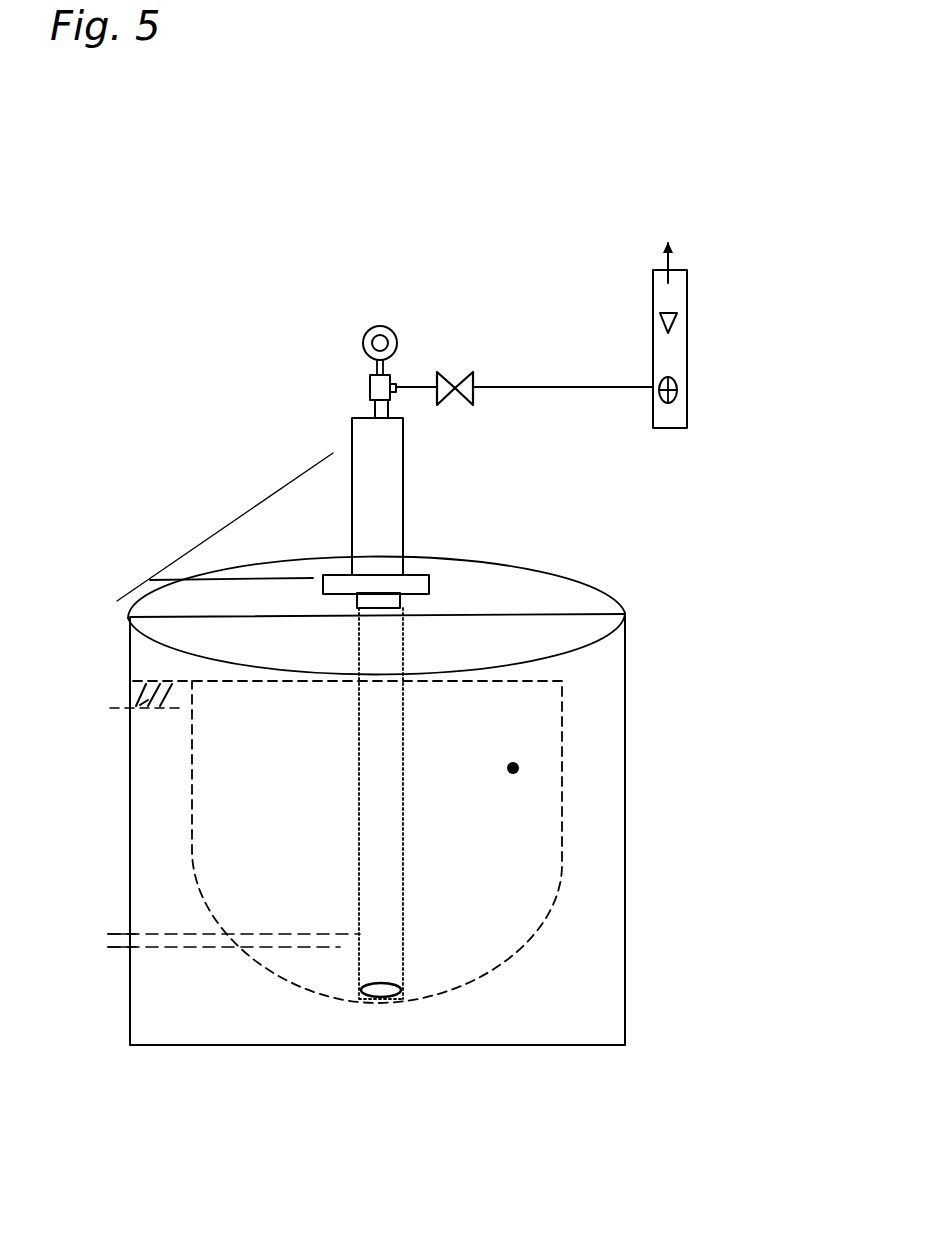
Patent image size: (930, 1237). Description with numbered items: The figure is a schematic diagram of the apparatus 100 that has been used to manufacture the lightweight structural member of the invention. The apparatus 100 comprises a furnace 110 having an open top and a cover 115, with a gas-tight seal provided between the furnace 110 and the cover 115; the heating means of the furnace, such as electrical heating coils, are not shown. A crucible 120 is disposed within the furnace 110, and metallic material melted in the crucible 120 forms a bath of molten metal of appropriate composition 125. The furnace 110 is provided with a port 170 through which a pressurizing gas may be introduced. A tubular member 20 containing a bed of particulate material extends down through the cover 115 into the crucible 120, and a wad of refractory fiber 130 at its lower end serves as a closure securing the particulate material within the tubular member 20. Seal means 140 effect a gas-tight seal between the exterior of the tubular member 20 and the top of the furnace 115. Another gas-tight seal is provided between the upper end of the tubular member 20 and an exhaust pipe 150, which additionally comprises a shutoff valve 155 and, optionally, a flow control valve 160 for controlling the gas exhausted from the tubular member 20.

The apparatus 100 is at (193, 526).
The tubular member 20 is at (352, 522).
The furnace 110 is at (636, 877).
The cover 115 is at (584, 597).
The crucible 120 is at (580, 788).
The bath of molten metal 125 is at (517, 766).
The wad of refractory fiber 130 is at (358, 983).
The seal means 140 is at (434, 580).
The exhaust pipe 150 is at (415, 383).
The shutoff valve 155 is at (448, 380).
The flow control valve 160 is at (636, 338).
The port 170 is at (128, 693).